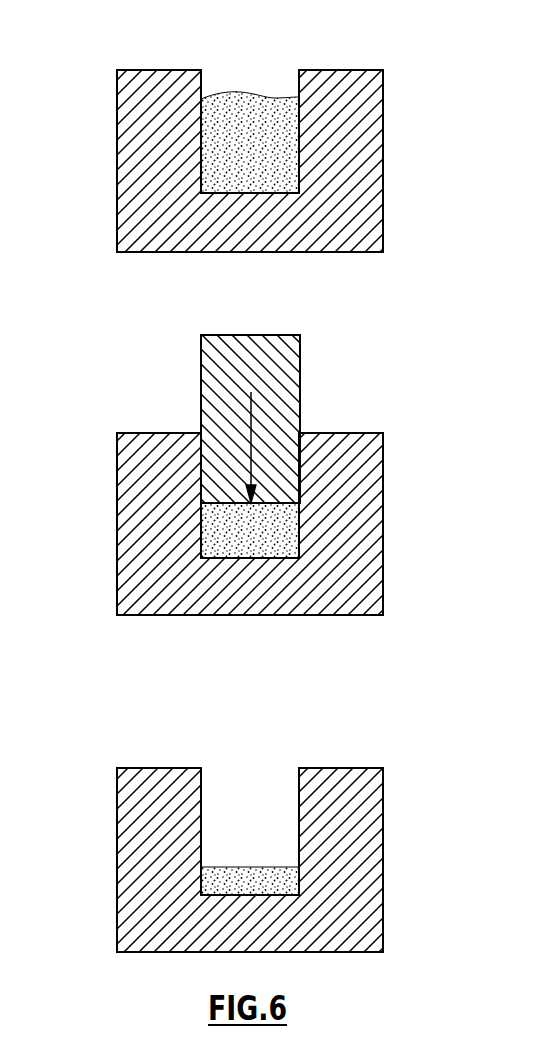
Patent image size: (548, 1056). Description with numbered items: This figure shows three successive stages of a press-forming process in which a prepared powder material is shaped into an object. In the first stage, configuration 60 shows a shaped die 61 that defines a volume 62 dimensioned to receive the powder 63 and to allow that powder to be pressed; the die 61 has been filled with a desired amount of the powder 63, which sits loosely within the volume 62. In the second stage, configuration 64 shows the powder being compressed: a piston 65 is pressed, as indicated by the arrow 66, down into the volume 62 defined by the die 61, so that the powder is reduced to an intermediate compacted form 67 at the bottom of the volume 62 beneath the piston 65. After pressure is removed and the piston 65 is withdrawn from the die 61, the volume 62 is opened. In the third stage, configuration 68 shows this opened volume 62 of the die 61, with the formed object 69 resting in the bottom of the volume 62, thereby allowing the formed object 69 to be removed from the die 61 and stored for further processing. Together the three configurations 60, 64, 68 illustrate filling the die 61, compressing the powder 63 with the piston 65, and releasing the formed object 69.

The configuration 60 is at (240, 140).
The shaped die 61 is at (383, 167).
The volume 62 is at (263, 82).
The powder 63 is at (222, 104).
The configuration 64 is at (227, 475).
The piston 65 is at (300, 387).
The arrow 66 is at (250, 421).
The intermediate compacted form 67 is at (273, 533).
The configuration 68 is at (208, 860).
The formed object 69 is at (240, 866).